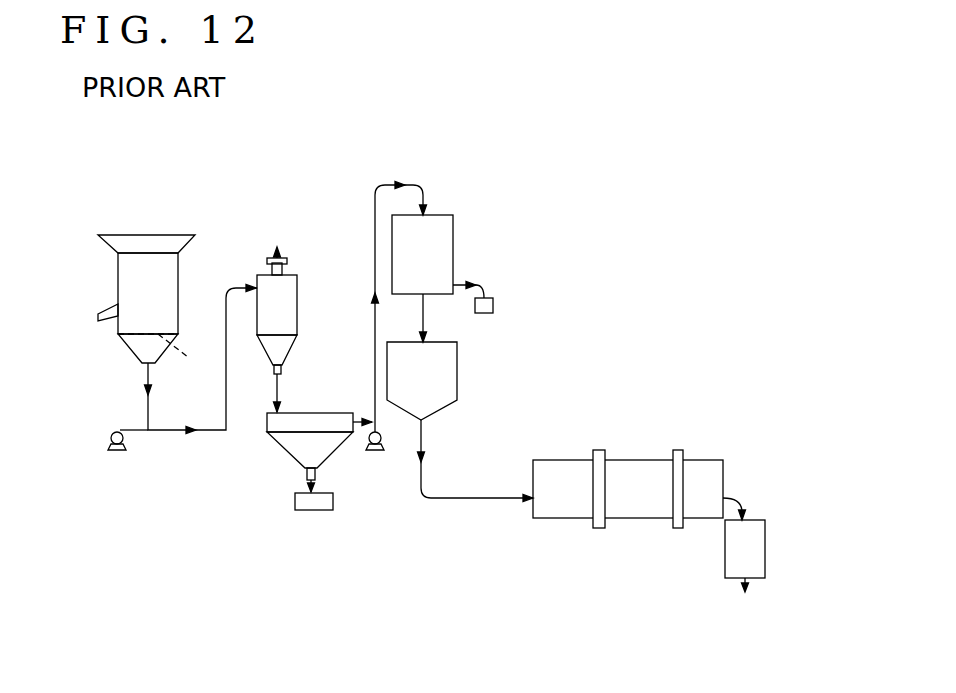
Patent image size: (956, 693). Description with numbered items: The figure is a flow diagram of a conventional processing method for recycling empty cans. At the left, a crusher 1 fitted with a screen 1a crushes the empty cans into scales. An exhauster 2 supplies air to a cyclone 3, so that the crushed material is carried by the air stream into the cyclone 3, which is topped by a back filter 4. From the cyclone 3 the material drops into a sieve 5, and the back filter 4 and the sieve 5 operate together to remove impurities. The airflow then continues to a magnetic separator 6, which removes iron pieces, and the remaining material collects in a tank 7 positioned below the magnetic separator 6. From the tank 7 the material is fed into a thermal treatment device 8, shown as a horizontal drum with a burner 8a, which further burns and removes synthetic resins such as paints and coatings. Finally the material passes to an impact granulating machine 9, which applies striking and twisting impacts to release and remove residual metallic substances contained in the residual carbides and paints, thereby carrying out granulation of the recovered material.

The crusher 1 is at (122, 272).
The screen 1a is at (190, 354).
The exhauster 2 is at (111, 439).
The cyclone 3 is at (297, 310).
The back filter 4 is at (287, 260).
The sieve 5 is at (318, 424).
The magnetic separator 6 is at (453, 236).
The tank 7 is at (457, 378).
The thermal treatment device 8 is at (640, 470).
The burner 8a is at (738, 490).
The impact granulating machine 9 is at (726, 550).